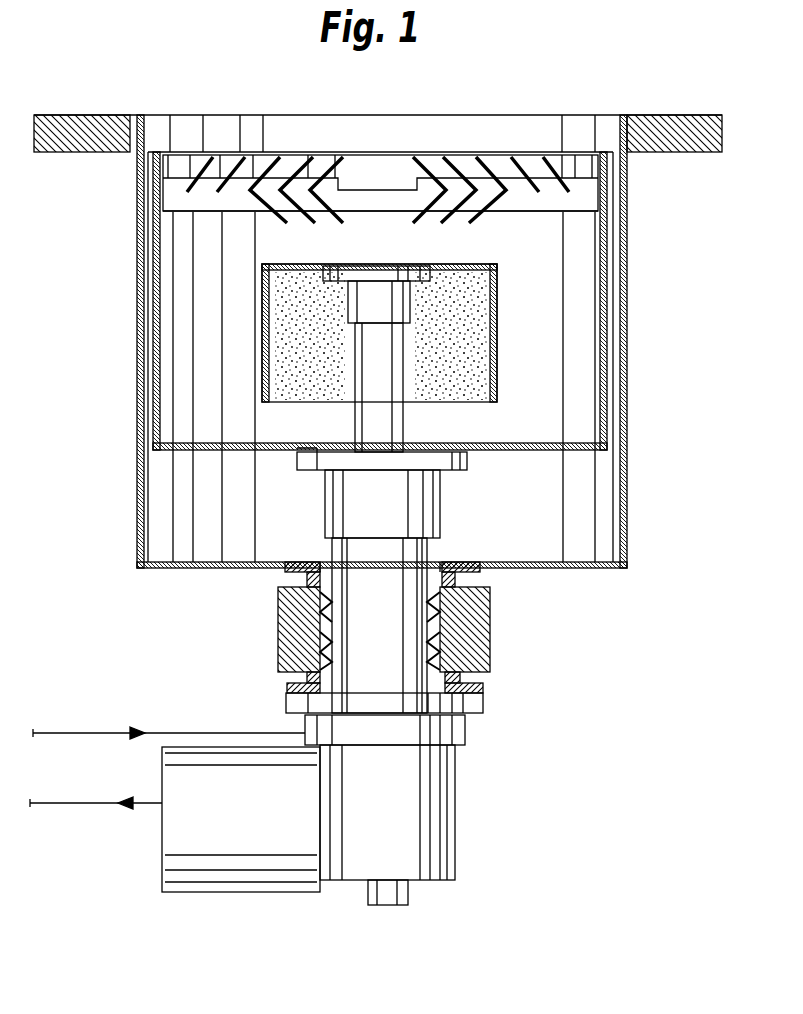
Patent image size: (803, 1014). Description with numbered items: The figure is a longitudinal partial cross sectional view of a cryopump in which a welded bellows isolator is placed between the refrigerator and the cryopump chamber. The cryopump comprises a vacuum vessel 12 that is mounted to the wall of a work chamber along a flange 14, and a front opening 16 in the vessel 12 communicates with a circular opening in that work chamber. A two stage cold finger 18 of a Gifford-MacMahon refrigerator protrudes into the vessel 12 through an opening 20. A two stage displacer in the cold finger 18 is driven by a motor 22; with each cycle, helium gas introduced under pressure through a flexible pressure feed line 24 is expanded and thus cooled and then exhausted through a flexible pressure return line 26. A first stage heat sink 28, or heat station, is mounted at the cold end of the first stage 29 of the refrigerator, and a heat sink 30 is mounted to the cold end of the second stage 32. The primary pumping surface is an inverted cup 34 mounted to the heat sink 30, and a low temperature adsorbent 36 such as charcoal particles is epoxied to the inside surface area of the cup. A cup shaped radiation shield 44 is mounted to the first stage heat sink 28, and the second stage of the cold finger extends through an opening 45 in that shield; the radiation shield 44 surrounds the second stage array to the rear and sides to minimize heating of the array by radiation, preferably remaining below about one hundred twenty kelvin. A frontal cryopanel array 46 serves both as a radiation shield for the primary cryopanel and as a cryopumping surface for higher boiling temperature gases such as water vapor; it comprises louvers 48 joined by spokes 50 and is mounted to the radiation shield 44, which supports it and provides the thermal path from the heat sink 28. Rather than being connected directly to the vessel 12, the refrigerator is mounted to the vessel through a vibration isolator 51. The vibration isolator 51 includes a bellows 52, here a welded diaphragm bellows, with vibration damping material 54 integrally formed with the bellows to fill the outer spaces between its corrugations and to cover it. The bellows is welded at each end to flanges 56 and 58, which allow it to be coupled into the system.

The vacuum vessel 12 is at (140, 538).
The flange 14 is at (90, 153).
The front opening 16 is at (487, 112).
The two stage cold finger 18 is at (455, 510).
The opening 20 is at (440, 555).
The motor 22 is at (245, 880).
The flexible pressure feed line 24 is at (115, 732).
The flexible pressure return line 26 is at (100, 803).
The first stage heat sink 28 is at (320, 465).
The first stage 29 is at (413, 650).
The heat sink 30 is at (343, 264).
The second stage 32 is at (363, 372).
The inverted cup 34 is at (497, 350).
The low temperature adsorbent 36 is at (480, 395).
The radiation shield 44 is at (137, 338).
The opening 45 is at (355, 445).
The frontal cryopanel array 46 is at (290, 150).
The louvers 48 is at (337, 185).
The spokes 50 is at (582, 197).
The vibration isolator 51 is at (492, 613).
The bellows 52 is at (283, 645).
The vibration damping material 54 is at (283, 622).
The flange 56 is at (285, 572).
The flange 58 is at (287, 688).